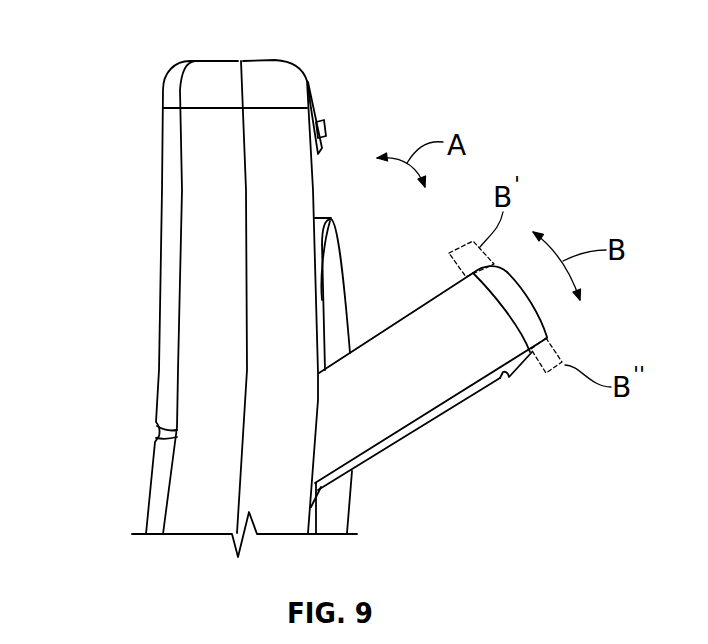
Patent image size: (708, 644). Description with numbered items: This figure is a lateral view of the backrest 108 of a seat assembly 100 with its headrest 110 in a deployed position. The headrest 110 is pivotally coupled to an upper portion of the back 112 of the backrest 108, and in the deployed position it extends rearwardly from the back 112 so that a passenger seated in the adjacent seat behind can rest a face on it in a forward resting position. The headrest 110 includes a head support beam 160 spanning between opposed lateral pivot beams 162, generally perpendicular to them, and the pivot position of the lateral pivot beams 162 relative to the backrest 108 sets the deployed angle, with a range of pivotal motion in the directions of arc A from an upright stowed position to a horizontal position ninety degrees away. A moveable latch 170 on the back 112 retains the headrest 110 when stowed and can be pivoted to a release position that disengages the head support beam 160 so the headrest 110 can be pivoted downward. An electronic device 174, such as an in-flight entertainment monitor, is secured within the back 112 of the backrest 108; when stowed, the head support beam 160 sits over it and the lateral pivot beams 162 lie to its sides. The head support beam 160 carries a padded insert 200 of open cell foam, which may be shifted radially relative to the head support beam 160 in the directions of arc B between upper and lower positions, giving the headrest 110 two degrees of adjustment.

The seat assembly 100 is at (133, 55).
The backrest 108 is at (220, 60).
The back 112 is at (308, 80).
The latch 170 is at (326, 134).
The electronic device 174 is at (343, 265).
The headrest 110 is at (423, 297).
The padded insert 200 is at (533, 297).
The head support beam 160 is at (520, 357).
The lateral pivot beams 162 is at (428, 393).